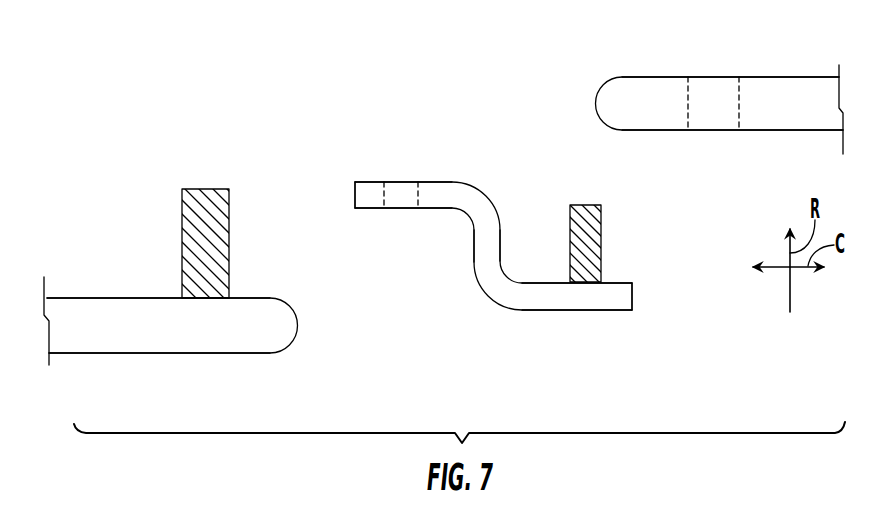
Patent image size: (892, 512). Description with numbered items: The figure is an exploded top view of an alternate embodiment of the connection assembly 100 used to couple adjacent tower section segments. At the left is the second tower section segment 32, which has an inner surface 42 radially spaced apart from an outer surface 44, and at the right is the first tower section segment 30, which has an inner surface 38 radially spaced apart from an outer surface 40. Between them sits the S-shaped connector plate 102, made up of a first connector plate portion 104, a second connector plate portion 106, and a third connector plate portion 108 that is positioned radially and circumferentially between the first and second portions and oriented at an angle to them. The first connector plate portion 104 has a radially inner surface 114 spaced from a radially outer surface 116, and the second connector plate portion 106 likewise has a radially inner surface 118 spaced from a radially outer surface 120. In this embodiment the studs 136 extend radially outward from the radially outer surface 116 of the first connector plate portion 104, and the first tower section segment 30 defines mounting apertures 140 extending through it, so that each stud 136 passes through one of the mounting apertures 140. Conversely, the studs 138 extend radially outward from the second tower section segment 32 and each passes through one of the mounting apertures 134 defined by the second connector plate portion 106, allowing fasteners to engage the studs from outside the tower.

The connection assembly 100 is at (135, 152).
The connector plate 102 is at (412, 297).
The first connector plate portion 104 is at (566, 310).
The second connector plate portion 106 is at (370, 203).
The third connector plate portion 108 is at (493, 240).
The radially inner surface 114 is at (527, 311).
The radially outer surface 116 is at (532, 283).
The radially inner surface 118 is at (441, 210).
The radially outer surface 120 is at (428, 182).
The mounting apertures 134 is at (399, 174).
The studs 136 is at (601, 225).
The studs 138 is at (229, 210).
The mounting apertures 140 is at (712, 71).
The first tower section segment 30 is at (809, 122).
The second tower section segment 32 is at (124, 353).
The inner surface 38 is at (752, 131).
The outer surface 40 is at (785, 77).
The inner surface 42 is at (183, 353).
The outer surface 44 is at (92, 298).